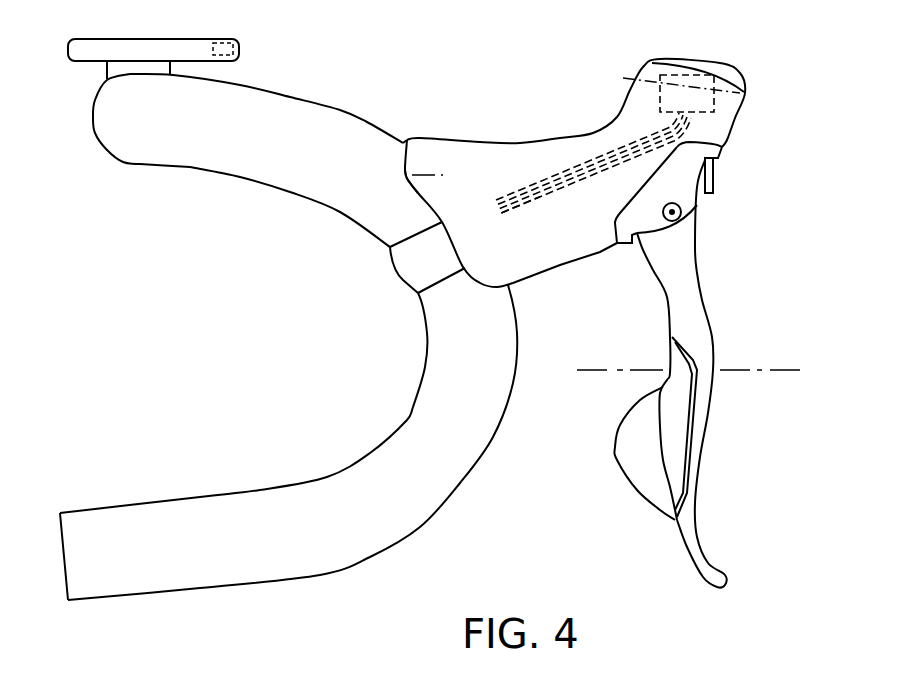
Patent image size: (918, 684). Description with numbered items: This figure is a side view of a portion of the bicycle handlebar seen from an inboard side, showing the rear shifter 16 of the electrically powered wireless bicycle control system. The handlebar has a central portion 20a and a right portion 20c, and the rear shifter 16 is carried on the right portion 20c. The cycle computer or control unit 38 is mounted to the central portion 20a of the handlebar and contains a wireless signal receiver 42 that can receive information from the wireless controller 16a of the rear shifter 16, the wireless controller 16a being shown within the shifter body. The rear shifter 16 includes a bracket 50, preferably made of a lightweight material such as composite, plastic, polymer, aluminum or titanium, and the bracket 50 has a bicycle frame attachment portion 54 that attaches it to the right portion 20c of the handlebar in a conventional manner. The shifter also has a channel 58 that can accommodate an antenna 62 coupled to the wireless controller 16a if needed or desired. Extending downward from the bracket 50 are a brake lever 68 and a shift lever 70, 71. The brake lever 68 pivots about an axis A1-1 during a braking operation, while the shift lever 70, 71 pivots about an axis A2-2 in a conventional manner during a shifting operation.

The rear shifter 16 is at (601, 323).
The wireless controller 16a is at (661, 88).
The central portion 20a is at (92, 137).
The right portion 20c is at (308, 130).
The control unit 38 is at (132, 45).
The wireless signal receiver 42 is at (242, 47).
The bracket 50 is at (487, 165).
The bicycle frame attachment portion 54 is at (413, 187).
The channel 58 is at (553, 173).
The antenna 62 is at (518, 209).
The brake lever 68 is at (705, 308).
The shift lever 70 is at (645, 470).
The shift lever 71 is at (682, 367).
The axis A1-1 is at (675, 218).
The axis A2-2 is at (782, 373).